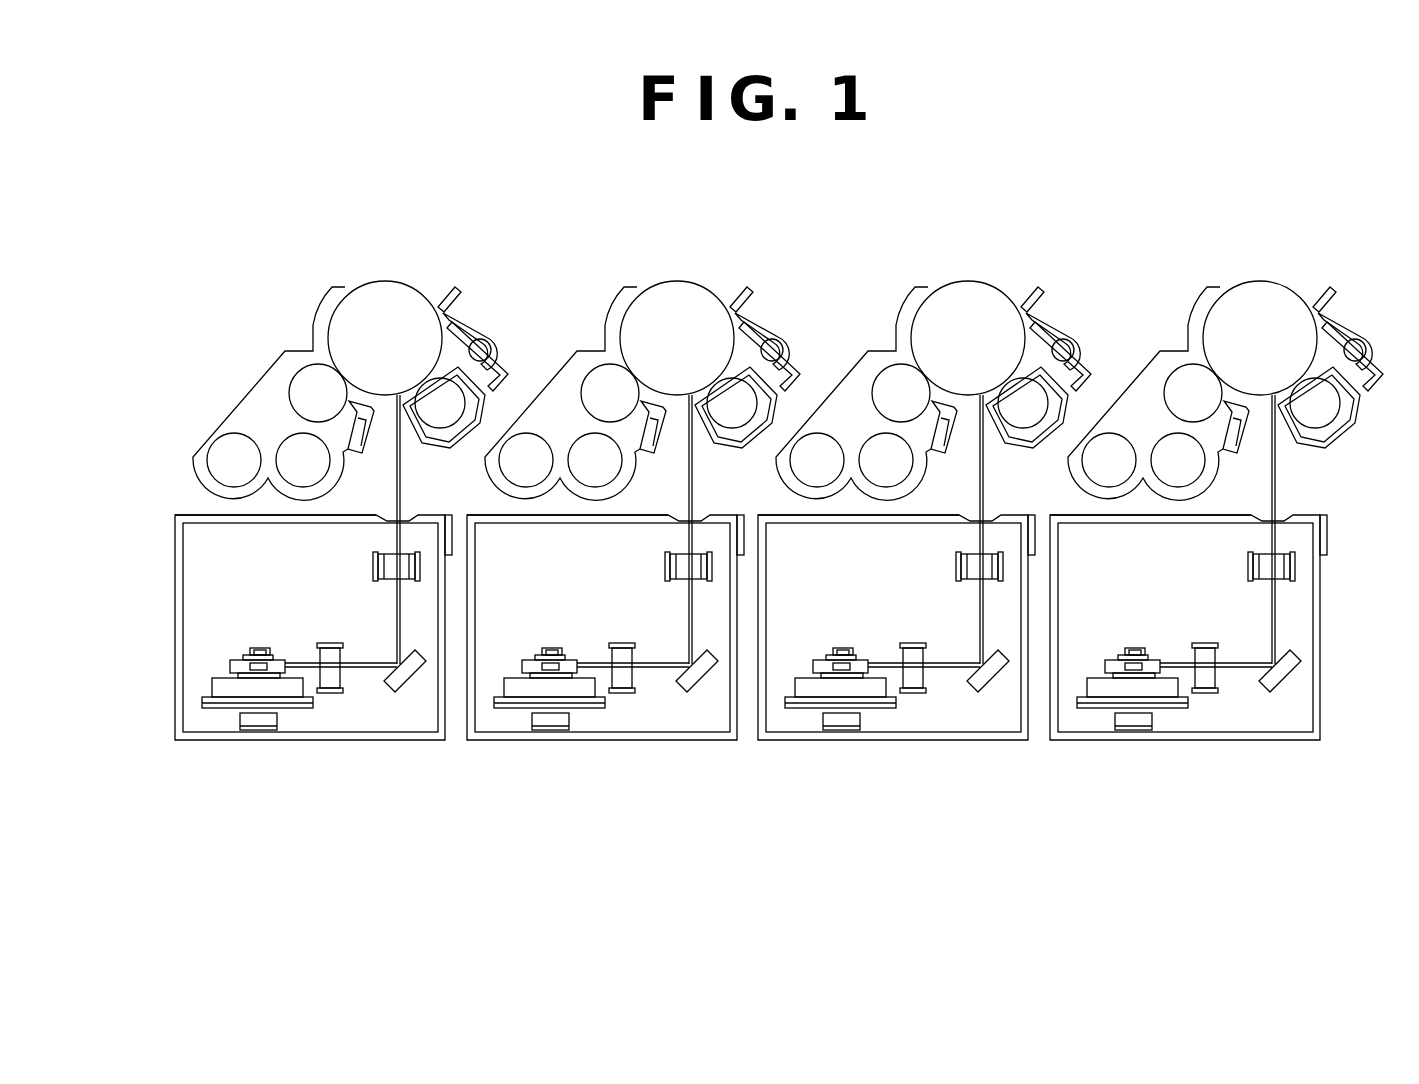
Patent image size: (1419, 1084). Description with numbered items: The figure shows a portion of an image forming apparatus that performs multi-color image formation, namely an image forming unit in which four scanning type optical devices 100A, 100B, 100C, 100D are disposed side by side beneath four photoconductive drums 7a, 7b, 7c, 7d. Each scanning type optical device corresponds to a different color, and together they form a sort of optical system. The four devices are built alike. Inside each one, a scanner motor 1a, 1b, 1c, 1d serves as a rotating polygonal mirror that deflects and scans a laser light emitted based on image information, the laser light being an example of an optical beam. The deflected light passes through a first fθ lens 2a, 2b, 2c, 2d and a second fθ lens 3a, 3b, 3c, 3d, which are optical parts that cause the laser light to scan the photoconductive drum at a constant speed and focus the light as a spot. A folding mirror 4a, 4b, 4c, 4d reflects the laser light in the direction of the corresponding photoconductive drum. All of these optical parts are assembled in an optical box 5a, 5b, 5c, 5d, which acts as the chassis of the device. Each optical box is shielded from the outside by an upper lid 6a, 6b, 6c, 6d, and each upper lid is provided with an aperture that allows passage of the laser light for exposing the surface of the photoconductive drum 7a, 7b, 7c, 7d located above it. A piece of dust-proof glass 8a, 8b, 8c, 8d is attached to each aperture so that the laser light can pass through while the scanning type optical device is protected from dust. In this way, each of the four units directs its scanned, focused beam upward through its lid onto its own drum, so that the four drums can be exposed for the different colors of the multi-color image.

The scanner motor 1a is at (262, 731).
The scanner motor 1b is at (549, 732).
The scanner motor 1c is at (840, 732).
The scanner motor 1d is at (1132, 732).
The fθ lens 2a is at (330, 693).
The fθ lens 2b is at (622, 730).
The fθ lens 2c is at (913, 730).
The fθ lens 2d is at (1205, 730).
The fθ lens 3a is at (373, 558).
The fθ lens 3b is at (716, 669).
The fθ lens 3c is at (1006, 669).
The fθ lens 3d is at (1330, 569).
The folding mirror 4a is at (402, 690).
The folding mirror 4b is at (699, 733).
The folding mirror 4c is at (989, 733).
The folding mirror 4d is at (1282, 733).
The optical box 5a is at (175, 668).
The optical box 5b is at (601, 666).
The optical box 5c is at (893, 666).
The optical box 5d is at (1231, 627).
The upper lid 6a is at (190, 514).
The upper lid 6b is at (605, 509).
The upper lid 6c is at (896, 509).
The upper lid 6d is at (1188, 509).
The photoconductive drum 7a is at (385, 289).
The photoconductive drum 7b is at (677, 301).
The photoconductive drum 7c is at (968, 301).
The photoconductive drum 7d is at (1260, 301).
The dust-proof glass 8a is at (387, 519).
The dust-proof glass 8b is at (668, 531).
The dust-proof glass 8c is at (959, 531).
The dust-proof glass 8d is at (1251, 531).
The scanning type optical device 100A is at (296, 559).
The scanning type optical device 100B is at (632, 559).
The scanning type optical device 100C is at (924, 559).
The scanning type optical device 100D is at (1231, 559).